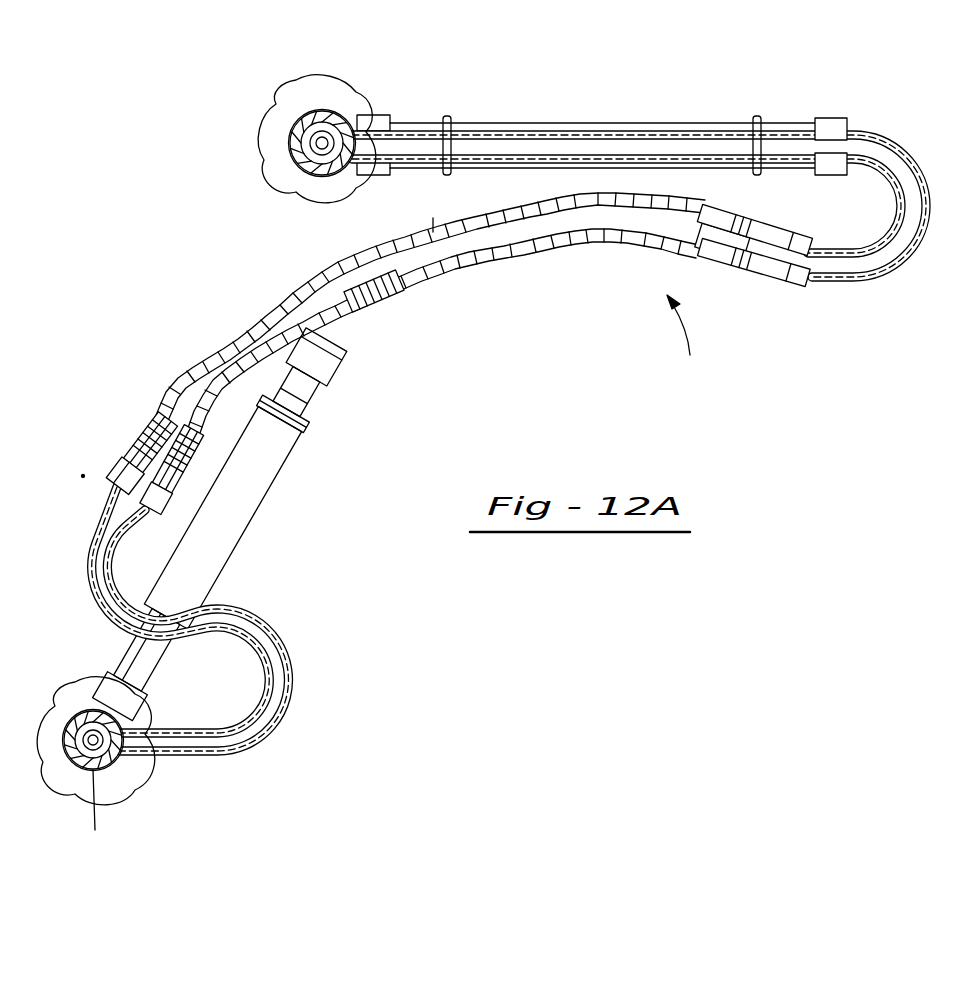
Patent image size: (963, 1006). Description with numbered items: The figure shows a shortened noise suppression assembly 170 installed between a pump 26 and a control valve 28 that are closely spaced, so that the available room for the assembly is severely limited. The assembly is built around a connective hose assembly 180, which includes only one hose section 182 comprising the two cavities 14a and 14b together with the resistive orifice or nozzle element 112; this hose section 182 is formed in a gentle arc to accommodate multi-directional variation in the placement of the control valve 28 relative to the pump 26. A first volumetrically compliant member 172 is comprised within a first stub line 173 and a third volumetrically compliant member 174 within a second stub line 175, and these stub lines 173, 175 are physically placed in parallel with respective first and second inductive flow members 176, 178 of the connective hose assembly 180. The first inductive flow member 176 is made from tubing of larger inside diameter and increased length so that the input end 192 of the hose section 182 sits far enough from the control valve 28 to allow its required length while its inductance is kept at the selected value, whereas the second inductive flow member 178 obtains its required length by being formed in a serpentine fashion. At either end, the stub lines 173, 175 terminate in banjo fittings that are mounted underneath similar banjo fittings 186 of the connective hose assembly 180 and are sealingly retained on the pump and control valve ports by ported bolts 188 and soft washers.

The pump 26 is at (300, 85).
The control valve 28 is at (150, 806).
The cavity 14a is at (588, 232).
The cavity 14b is at (248, 335).
The resistive orifice or nozzle element 112 is at (392, 290).
The shortened noise suppression assembly 170 is at (683, 341).
The first volumetrically compliant member 172 is at (590, 122).
The first stub line 173 is at (452, 116).
The third volumetrically compliant member 174 is at (262, 505).
The second stub line 175 is at (210, 602).
The first inductive flow member 176 is at (845, 118).
The second inductive flow member 178 is at (292, 660).
The connective hose assembly 180 is at (350, 322).
The hose section 182 is at (433, 220).
The banjo fitting 186 is at (348, 110).
The ported bolt 188 is at (262, 150).
The input end 192 is at (745, 224).